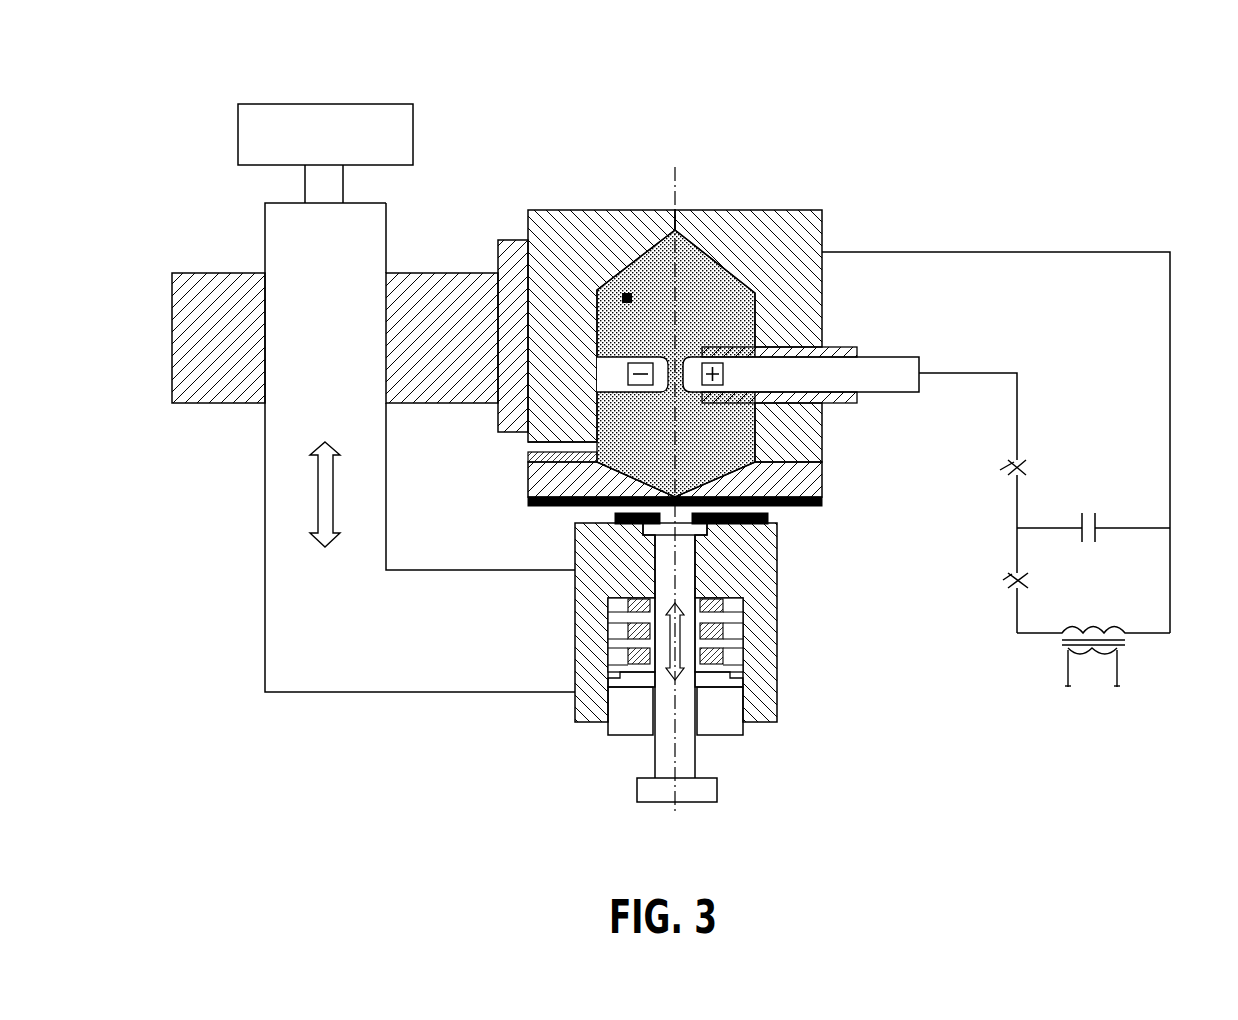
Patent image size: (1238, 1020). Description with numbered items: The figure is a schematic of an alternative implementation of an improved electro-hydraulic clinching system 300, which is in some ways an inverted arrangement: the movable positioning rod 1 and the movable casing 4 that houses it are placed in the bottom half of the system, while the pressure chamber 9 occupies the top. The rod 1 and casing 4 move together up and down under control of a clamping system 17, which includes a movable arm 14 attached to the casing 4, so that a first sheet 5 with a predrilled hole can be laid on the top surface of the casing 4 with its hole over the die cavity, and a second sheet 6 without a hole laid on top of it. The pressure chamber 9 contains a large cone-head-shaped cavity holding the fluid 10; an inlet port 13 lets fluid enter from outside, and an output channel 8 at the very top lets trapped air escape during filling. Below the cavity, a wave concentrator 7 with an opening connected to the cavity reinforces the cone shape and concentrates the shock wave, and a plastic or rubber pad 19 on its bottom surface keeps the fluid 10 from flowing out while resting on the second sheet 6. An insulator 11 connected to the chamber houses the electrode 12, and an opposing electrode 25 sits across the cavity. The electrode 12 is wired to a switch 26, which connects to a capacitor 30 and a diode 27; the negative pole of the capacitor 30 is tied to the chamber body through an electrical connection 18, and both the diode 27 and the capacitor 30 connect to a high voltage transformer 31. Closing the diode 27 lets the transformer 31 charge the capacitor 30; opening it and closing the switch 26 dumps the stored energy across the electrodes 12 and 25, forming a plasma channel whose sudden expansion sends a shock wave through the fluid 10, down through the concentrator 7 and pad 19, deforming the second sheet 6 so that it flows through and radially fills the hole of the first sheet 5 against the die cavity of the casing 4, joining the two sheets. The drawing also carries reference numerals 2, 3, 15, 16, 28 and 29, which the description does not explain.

The electro-hydraulic clinching system 300 is at (190, 60).
The movable positioning rod 1 is at (717, 790).
The spring retainer bracket 2 is at (625, 735).
The spring 3 is at (745, 652).
The movable casing 4 is at (777, 562).
The first sheet 5 is at (770, 518).
The second sheet 6 is at (612, 516).
The wave concentrator 7 is at (822, 482).
The output channel 8 is at (673, 206).
The pressure chamber 9 is at (728, 210).
The fluid 10 is at (602, 250).
The insulator 11 is at (838, 347).
The electrode 12 is at (904, 357).
The inlet port 13 is at (528, 444).
The movable arm 14 is at (407, 570).
The support block 15 is at (398, 273).
The conductor 16 is at (1018, 407).
The clamping system 17 is at (413, 122).
The electrical connection 18 is at (1170, 412).
The pad 19 is at (528, 500).
The opposing electrode 25 is at (626, 374).
The switch 26 is at (1006, 462).
The diode 27 is at (1012, 584).
The transformer terminal 28 is at (1066, 672).
The transformer terminal 29 is at (1118, 680).
The capacitor 30 is at (1090, 510).
The high voltage transformer 31 is at (1092, 633).